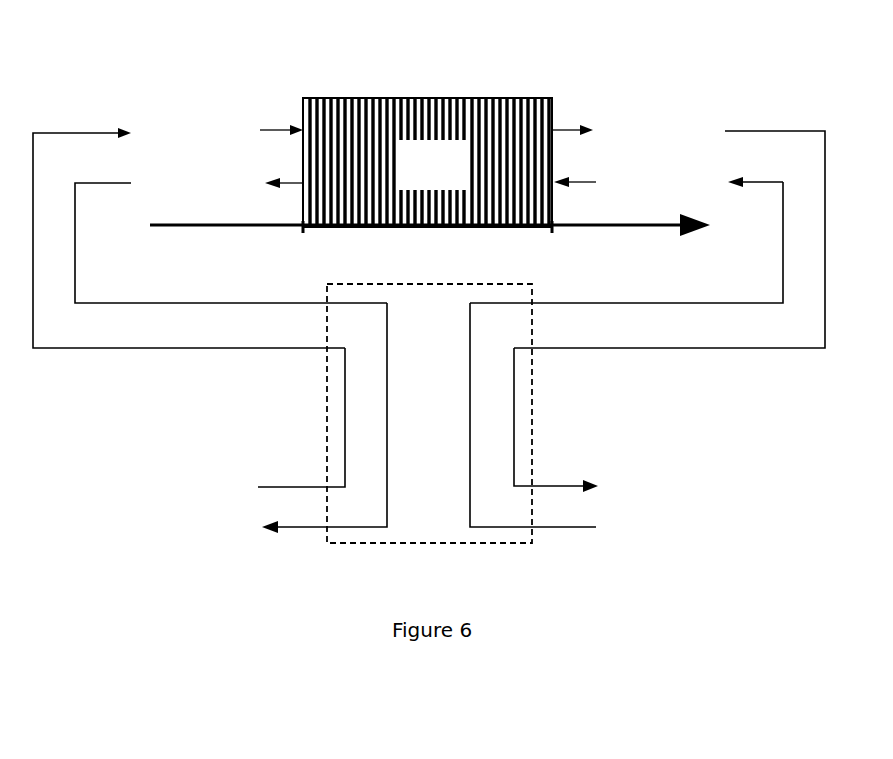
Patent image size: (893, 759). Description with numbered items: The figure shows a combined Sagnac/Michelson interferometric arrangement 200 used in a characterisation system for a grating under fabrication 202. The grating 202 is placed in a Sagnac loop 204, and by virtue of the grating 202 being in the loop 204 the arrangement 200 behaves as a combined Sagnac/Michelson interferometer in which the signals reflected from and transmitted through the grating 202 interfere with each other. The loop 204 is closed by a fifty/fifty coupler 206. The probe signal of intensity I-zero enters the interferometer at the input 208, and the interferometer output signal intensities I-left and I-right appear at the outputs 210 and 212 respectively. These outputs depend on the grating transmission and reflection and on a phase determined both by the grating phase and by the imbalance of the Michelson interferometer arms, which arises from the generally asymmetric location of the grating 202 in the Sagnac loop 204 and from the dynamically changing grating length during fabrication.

The combined Sagnac/Michelson interferometric arrangement 200 is at (429, 390).
The grating under fabrication 202 is at (506, 91).
The Sagnac loop 204 is at (236, 386).
The coupler 206 is at (488, 545).
The interferometer input 208 is at (327, 487).
The left interferometer output 210 is at (327, 533).
The right interferometer output 212 is at (530, 487).